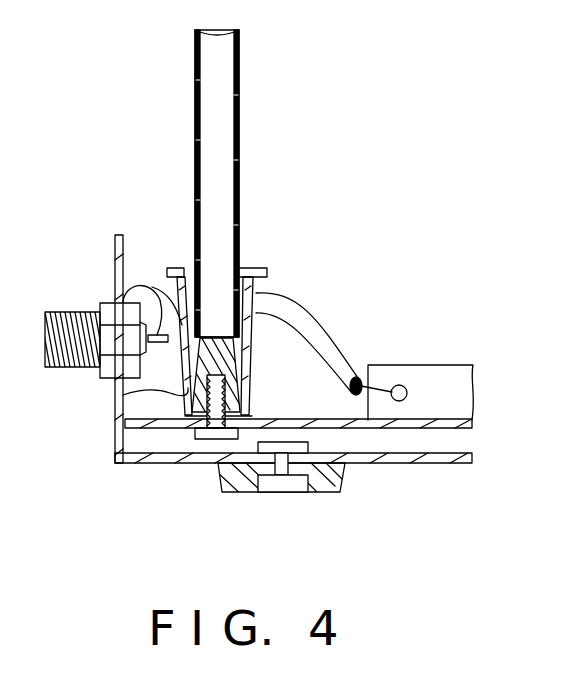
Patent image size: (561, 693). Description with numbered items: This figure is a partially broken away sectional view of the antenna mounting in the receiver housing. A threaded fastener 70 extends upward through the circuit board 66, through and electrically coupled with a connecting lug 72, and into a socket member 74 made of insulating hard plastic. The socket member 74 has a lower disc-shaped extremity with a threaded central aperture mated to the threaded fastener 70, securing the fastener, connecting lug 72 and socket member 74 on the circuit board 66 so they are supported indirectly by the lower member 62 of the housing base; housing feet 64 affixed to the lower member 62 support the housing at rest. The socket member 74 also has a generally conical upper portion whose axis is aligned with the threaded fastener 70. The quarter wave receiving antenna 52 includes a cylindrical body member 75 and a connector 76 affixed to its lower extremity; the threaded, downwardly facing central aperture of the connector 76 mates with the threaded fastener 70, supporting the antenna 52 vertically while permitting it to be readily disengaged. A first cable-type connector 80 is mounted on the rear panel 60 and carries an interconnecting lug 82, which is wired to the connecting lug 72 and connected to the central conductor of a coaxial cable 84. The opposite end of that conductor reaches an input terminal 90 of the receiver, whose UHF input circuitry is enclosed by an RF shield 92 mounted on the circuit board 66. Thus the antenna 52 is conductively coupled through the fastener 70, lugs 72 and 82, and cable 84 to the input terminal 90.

The quarter wave receiving antenna 52 is at (239, 70).
The cylindrical body member 75 is at (239, 148).
The socket member 74 is at (262, 272).
The connecting lug 72 is at (245, 411).
The threaded fastener 70 is at (213, 432).
The circuit board 66 is at (467, 431).
The rear panel 60 is at (115, 432).
The lower member 62 is at (447, 465).
The housing feet 64 is at (348, 478).
The first cable-type connector 80 is at (108, 302).
The connector 76 is at (118, 385).
The interconnecting lug 82 is at (152, 290).
The coaxial cable 84 is at (322, 327).
The RF shield 92 is at (452, 365).
The input terminal 90 is at (398, 385).